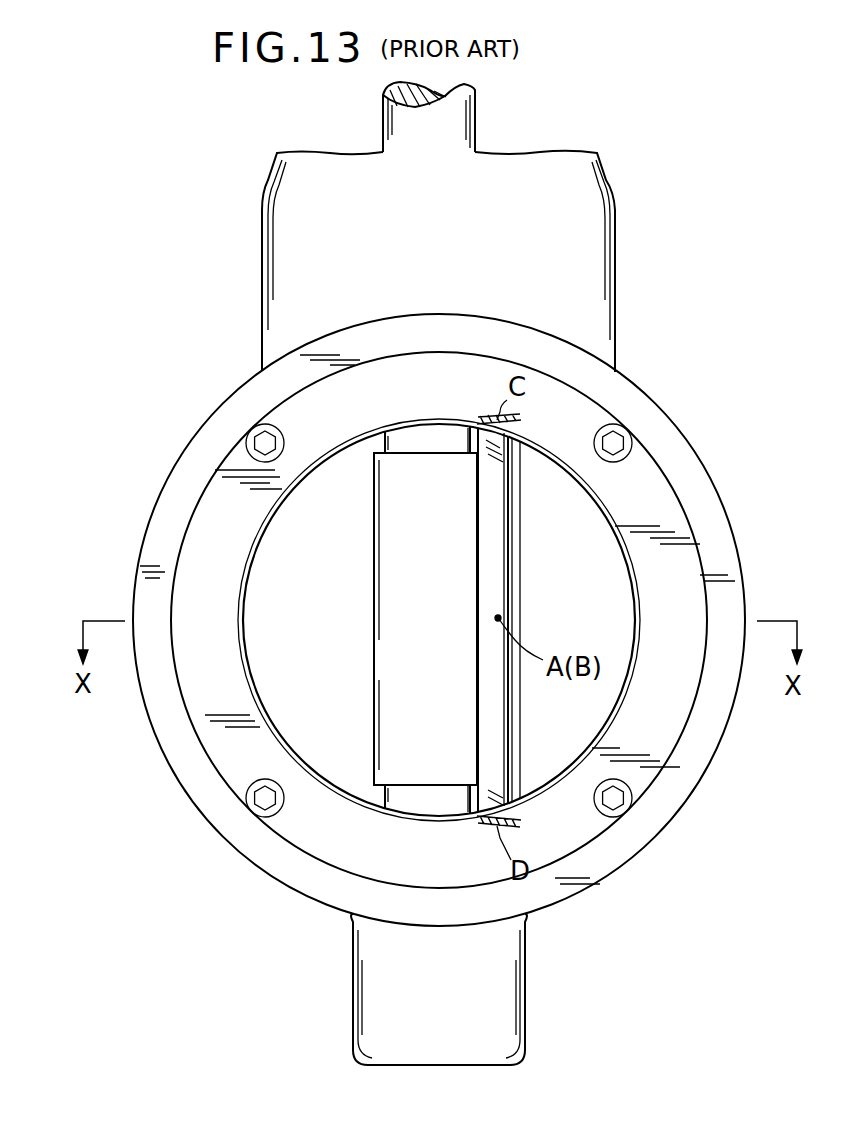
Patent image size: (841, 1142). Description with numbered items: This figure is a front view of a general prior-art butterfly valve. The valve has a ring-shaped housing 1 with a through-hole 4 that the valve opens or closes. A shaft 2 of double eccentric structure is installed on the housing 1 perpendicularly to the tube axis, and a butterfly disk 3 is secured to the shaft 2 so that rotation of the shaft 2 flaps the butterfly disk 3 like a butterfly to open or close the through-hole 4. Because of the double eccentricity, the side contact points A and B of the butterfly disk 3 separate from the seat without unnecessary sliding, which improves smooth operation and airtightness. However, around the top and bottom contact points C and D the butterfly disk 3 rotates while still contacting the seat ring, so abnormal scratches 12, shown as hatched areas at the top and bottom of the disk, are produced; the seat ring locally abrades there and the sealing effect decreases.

The housing 1 is at (606, 340).
The shaft 2 is at (472, 93).
The butterfly disk 3 is at (505, 553).
The through-hole 4 is at (605, 708).
The abnormal scratches 12 is at (490, 411).